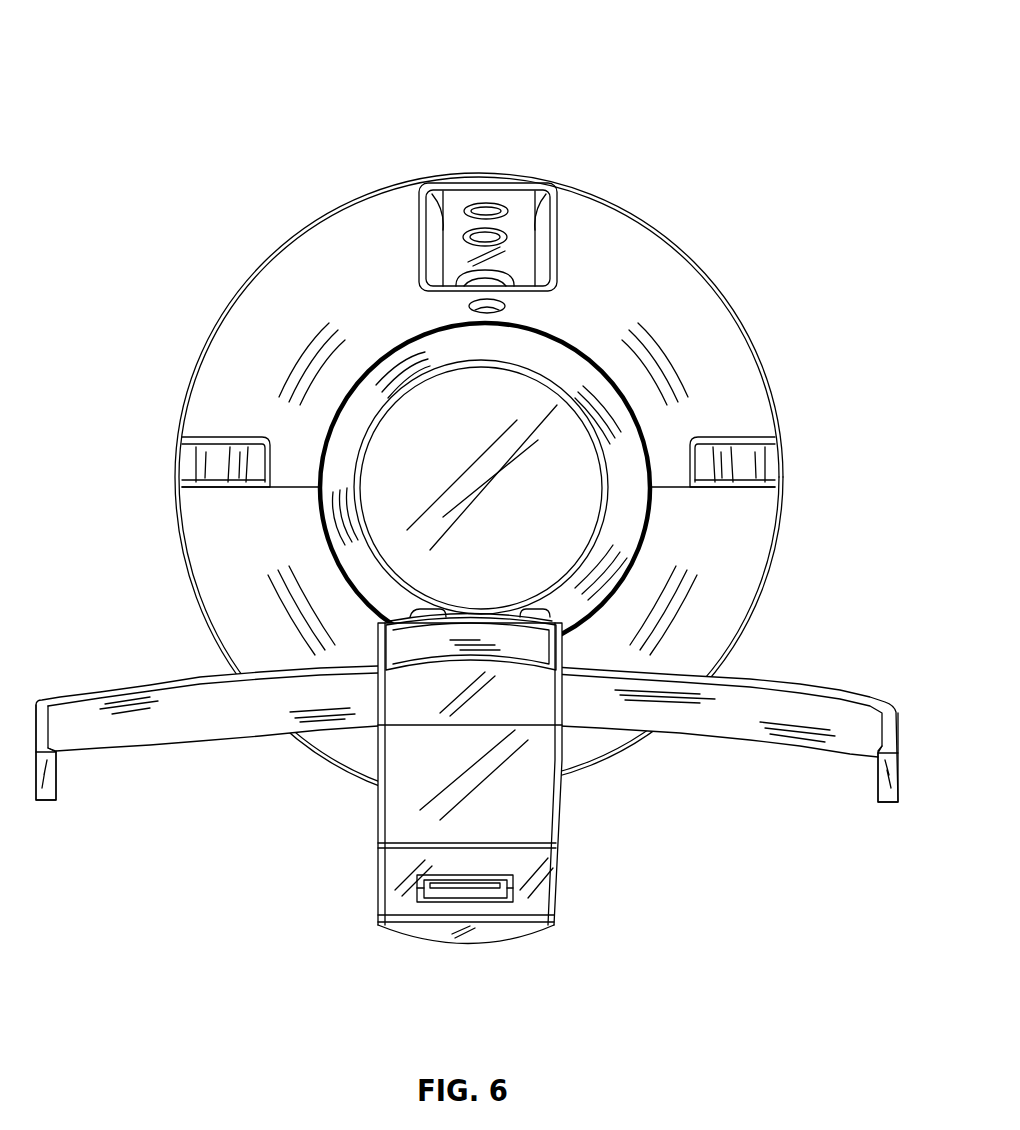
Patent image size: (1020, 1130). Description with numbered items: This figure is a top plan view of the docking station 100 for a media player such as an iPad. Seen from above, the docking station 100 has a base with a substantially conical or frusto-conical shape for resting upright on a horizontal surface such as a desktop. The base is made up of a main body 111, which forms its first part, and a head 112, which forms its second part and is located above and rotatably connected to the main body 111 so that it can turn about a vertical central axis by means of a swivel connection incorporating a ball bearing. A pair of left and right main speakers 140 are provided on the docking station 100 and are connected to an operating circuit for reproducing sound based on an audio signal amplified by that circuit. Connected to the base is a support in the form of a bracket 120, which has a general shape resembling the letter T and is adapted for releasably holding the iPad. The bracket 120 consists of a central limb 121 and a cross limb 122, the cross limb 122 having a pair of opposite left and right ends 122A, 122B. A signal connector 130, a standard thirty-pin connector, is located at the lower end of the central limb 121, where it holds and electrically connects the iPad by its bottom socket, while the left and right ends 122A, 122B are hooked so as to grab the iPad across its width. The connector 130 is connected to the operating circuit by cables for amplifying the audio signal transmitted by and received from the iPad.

The docking station 100 is at (279, 84).
The main body 111 is at (697, 367).
The head 112 is at (561, 362).
The main speakers 140 is at (192, 556).
The bracket 120 is at (473, 776).
The cross limb 122 is at (158, 703).
The left end 122A is at (52, 786).
The right end 122B is at (885, 800).
The central limb 121 is at (502, 776).
The signal connector 130 is at (505, 880).